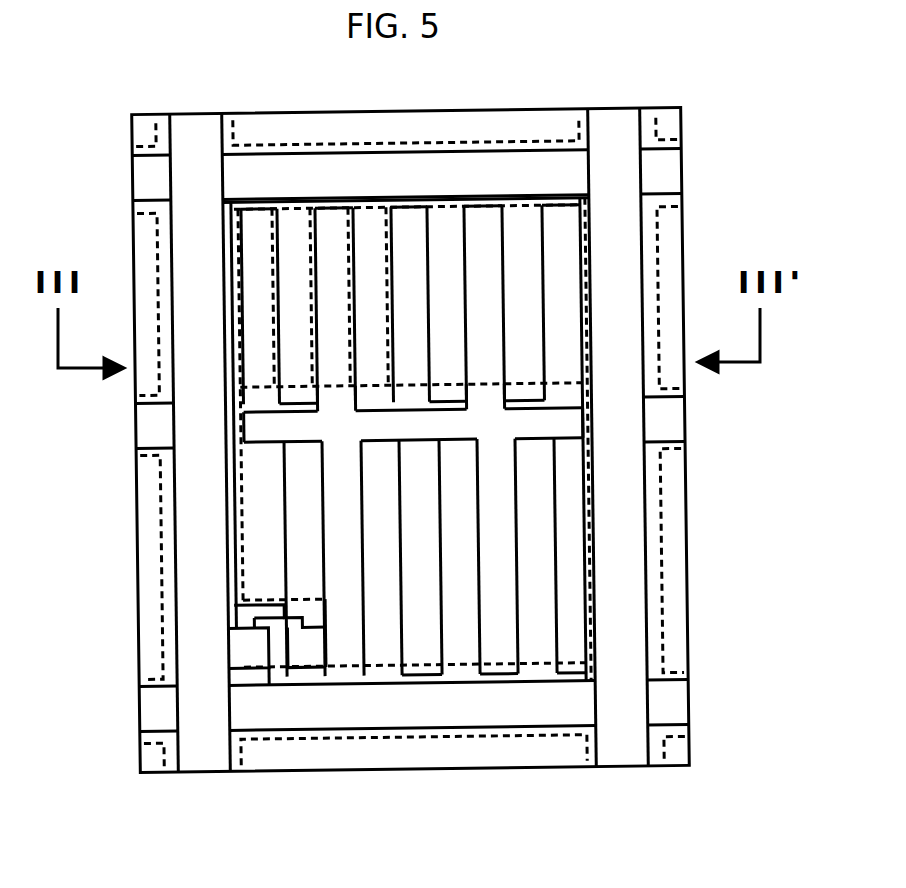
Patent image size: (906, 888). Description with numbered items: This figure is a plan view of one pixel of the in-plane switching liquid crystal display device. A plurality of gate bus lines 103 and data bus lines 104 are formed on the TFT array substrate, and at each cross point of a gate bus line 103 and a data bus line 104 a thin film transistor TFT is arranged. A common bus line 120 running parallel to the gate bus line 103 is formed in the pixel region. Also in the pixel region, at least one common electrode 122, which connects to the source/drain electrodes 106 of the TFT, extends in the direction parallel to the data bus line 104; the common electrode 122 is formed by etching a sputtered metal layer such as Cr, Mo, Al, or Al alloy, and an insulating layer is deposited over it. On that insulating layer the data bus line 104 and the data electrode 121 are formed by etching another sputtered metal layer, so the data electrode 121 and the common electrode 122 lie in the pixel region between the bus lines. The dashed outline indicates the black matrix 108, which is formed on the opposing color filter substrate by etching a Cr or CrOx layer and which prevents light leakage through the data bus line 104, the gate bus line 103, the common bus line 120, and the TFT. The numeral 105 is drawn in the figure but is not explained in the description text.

The gate bus line 103 is at (683, 706).
The data bus line 104 is at (205, 752).
The source electrode 105 is at (268, 678).
The source/drain electrodes 106 is at (250, 648).
The black matrix 108 is at (578, 222).
The common bus line 120 is at (668, 424).
The data electrode 121 is at (360, 655).
The common electrode 122 is at (428, 650).
The thin film transistor TFT is at (285, 690).